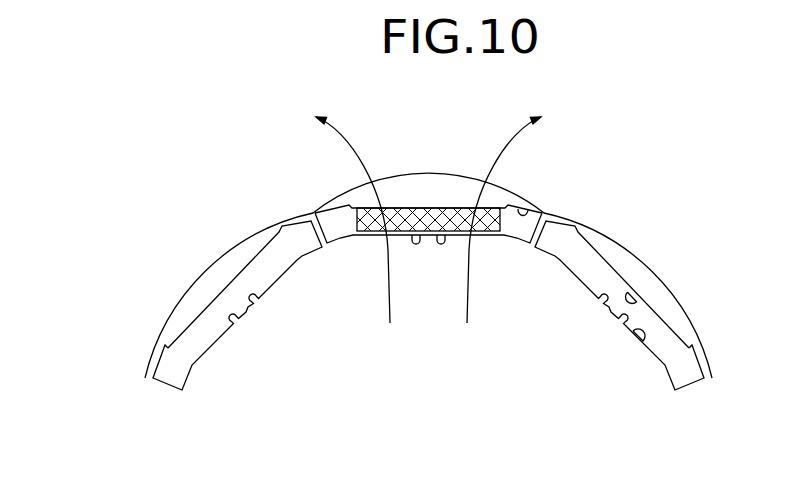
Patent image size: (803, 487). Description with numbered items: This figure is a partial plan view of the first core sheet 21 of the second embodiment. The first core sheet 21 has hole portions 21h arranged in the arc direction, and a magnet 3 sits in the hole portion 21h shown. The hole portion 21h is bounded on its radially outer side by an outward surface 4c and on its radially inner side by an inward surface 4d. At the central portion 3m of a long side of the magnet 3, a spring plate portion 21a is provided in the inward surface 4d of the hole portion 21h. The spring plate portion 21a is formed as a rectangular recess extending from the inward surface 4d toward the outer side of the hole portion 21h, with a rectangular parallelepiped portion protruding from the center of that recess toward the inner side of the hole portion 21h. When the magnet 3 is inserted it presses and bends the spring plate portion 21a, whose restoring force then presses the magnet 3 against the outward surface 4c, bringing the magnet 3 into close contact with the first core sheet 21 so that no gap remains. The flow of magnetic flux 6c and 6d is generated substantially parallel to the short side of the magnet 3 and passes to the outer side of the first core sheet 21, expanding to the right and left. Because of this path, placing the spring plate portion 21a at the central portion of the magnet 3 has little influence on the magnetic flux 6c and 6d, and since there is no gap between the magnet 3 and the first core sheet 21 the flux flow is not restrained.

The first core sheet 21 is at (62, 87).
The spring plate portion 21a is at (427, 240).
The hole portion 21h is at (533, 217).
The magnet 3 is at (414, 216).
The central portion of a long side of the magnet 3m is at (441, 213).
The outward surface 4c is at (634, 302).
The inward surface 4d is at (646, 333).
The magnetic flux 6c is at (331, 211).
The magnetic flux 6d is at (526, 211).